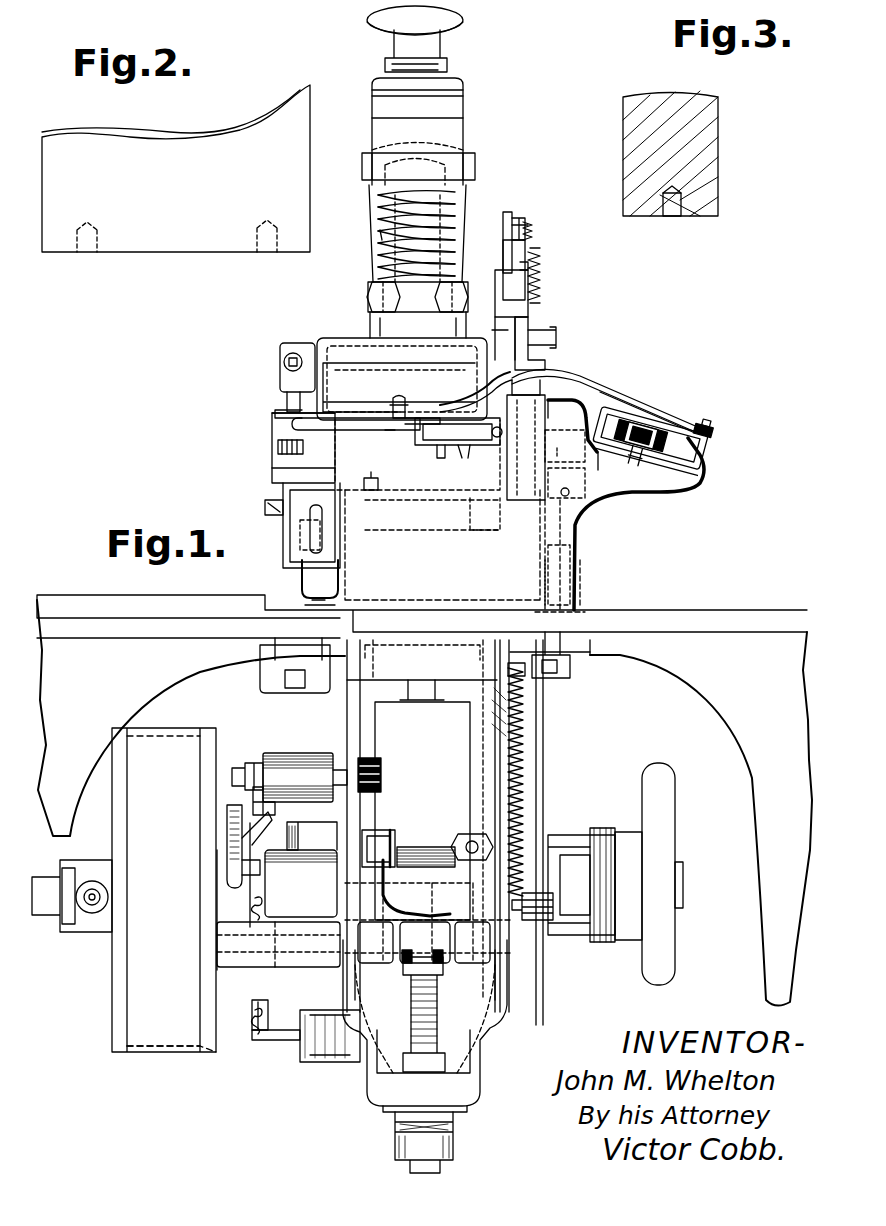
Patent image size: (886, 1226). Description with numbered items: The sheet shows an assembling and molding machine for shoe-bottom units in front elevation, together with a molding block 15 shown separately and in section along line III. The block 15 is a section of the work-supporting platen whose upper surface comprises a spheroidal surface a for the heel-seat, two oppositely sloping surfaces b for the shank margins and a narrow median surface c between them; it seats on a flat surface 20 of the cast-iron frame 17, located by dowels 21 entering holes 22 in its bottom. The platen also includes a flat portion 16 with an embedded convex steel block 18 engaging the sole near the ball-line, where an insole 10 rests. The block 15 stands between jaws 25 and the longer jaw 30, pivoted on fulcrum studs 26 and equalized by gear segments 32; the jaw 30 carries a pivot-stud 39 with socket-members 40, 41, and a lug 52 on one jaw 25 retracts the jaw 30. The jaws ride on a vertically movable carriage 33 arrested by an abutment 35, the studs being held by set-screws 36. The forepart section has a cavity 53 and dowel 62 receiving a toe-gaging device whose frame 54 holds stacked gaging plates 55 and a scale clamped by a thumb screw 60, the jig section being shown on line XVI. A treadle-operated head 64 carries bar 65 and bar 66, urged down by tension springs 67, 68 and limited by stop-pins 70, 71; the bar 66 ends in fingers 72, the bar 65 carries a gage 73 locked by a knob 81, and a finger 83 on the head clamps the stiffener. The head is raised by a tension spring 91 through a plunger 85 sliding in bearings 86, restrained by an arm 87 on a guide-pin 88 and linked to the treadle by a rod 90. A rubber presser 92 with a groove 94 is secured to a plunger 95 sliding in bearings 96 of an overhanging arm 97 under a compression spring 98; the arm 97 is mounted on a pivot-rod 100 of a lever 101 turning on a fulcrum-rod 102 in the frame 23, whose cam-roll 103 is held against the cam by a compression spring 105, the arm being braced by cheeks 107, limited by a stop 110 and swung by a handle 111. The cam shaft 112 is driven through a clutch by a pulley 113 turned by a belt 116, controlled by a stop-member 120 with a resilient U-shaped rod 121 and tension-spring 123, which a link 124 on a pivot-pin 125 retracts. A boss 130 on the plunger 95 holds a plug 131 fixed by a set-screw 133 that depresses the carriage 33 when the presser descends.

In FIG. 1, the insole 10 is at (610, 392).
In FIG. 2, the molding block 15 is at (176, 168).
In FIG. 3, the molding block 15 is at (718, 143).
In FIG. 1, the molding block 15 is at (352, 402).
In FIG. 1, the flat portion 16 is at (583, 386).
In FIG. 1, the cast-iron frame 17 is at (576, 547).
In FIG. 1, the steel block 18 is at (540, 385).
In FIG. 1, the flat surface 20 is at (380, 476).
In FIG. 1, the dowels 21 is at (375, 490).
In FIG. 2, the holes 22 is at (95, 245).
In FIG. 3, the holes 22 is at (672, 207).
In FIG. 1, the frame 23 is at (746, 614).
In FIG. 1, the jaws 25 is at (272, 430).
In FIG. 1, the fulcrum studs 26 is at (272, 414).
In FIG. 1, the jaw 30 is at (328, 432).
In FIG. 1, the gear segments 32 is at (278, 455).
In FIG. 1, the carriage 33 is at (272, 478).
In FIG. 1, the abutment 35 is at (283, 525).
In FIG. 1, the set-screws 36 is at (267, 508).
In FIG. 1, the pivot-stud 39 is at (440, 456).
In FIG. 1, the socket-member 40 is at (462, 458).
In FIG. 1, the socket-member 41 is at (440, 436).
In FIG. 1, the lug 52 is at (388, 435).
In FIG. 1, the cavity 53 is at (700, 475).
In FIG. 1, the frame 54 is at (700, 440).
In FIG. 1, the gaging plates 55 is at (640, 400).
In FIG. 1, the thumb screw 60 is at (697, 412).
In FIG. 1, the dowel 62 is at (630, 460).
In FIG. 1, the head 64 is at (497, 290).
In FIG. 1, the bar 65 is at (510, 250).
In FIG. 1, the bar 66 is at (505, 212).
In FIG. 1, the tension spring 67 is at (541, 278).
In FIG. 1, the tension spring 68 is at (533, 228).
In FIG. 1, the stop-pin 70 is at (520, 265).
In FIG. 1, the stop-pin 71 is at (520, 218).
In FIG. 1, the fingers 72 is at (470, 400).
In FIG. 1, the gage 73 is at (535, 355).
In FIG. 1, the knob 81 is at (548, 332).
In FIG. 1, the finger 83 is at (500, 345).
In FIG. 1, the plunger 85 is at (533, 552).
In FIG. 1, the bearings 86 is at (532, 520).
In FIG. 1, the arm 87 is at (570, 480).
In FIG. 1, the guide-pin 88 is at (578, 455).
In FIG. 1, the rod 90 is at (545, 742).
In FIG. 1, the tension spring 91 is at (524, 708).
In FIG. 1, the presser 92 is at (358, 365).
In FIG. 1, the groove 94 is at (410, 404).
In FIG. 1, the plunger 95 is at (400, 225).
In FIG. 1, the bearings 96 is at (380, 131).
In FIG. 1, the overhanging arm 97 is at (365, 735).
In FIG. 1, the compression spring 98 is at (382, 215).
In FIG. 1, the pivot-rod 100 is at (480, 985).
In FIG. 1, the lever 101 is at (415, 905).
In FIG. 1, the fulcrum-rod 102 is at (322, 940).
In FIG. 1, the cam-roll 103 is at (380, 835).
In FIG. 1, the compression spring 105 is at (413, 1010).
In FIG. 1, the cheeks 107 is at (300, 578).
In FIG. 1, the stop 110 is at (485, 530).
In FIG. 1, the handle 111 is at (365, 172).
In FIG. 1, the shaft 112 is at (683, 875).
In FIG. 1, the pulley 113 is at (118, 1037).
In FIG. 1, the belt 116 is at (178, 1052).
In FIG. 1, the stop-member 120 is at (235, 912).
In FIG. 1, the U-shaped rod 121 is at (233, 872).
In FIG. 1, the tension-spring 123 is at (262, 1020).
In FIG. 1, the link 124 is at (253, 806).
In FIG. 1, the pivot-pin 125 is at (308, 770).
In FIG. 1, the boss 130 is at (280, 352).
In FIG. 1, the plug 131 is at (287, 400).
In FIG. 1, the set-screw 133 is at (284, 365).
In FIG. 2, the spheroidal surface a is at (75, 127).
In FIG. 3, the spheroidal surface a is at (648, 90).
In FIG. 2, the sloping surfaces b is at (205, 132).
In FIG. 2, the median surface c is at (272, 110).
In FIG. 2, the section line III is at (87, 275).
In FIG. 1, the section line XVI is at (652, 450).